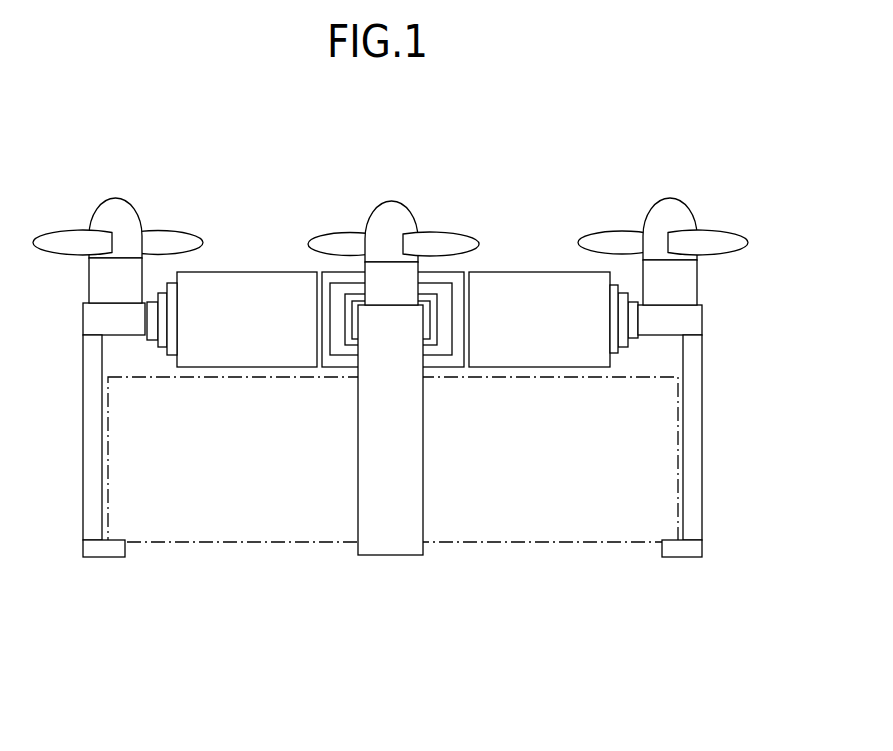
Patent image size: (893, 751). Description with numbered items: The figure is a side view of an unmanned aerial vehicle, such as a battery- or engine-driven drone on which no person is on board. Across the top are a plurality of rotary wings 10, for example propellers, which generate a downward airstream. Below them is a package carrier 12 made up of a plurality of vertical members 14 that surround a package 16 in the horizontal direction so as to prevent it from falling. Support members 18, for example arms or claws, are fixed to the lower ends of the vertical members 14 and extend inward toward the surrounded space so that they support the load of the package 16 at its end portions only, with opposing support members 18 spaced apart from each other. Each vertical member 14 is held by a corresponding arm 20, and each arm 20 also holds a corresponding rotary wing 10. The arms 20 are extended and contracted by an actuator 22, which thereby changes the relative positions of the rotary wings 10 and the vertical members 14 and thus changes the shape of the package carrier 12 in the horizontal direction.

The rotary wing 10 is at (167, 232).
The package carrier 12 is at (722, 352).
The vertical member 14 is at (95, 412).
The package 16 is at (540, 543).
The support member 18 is at (100, 558).
The arm 20 is at (160, 355).
The actuator 22 is at (433, 368).